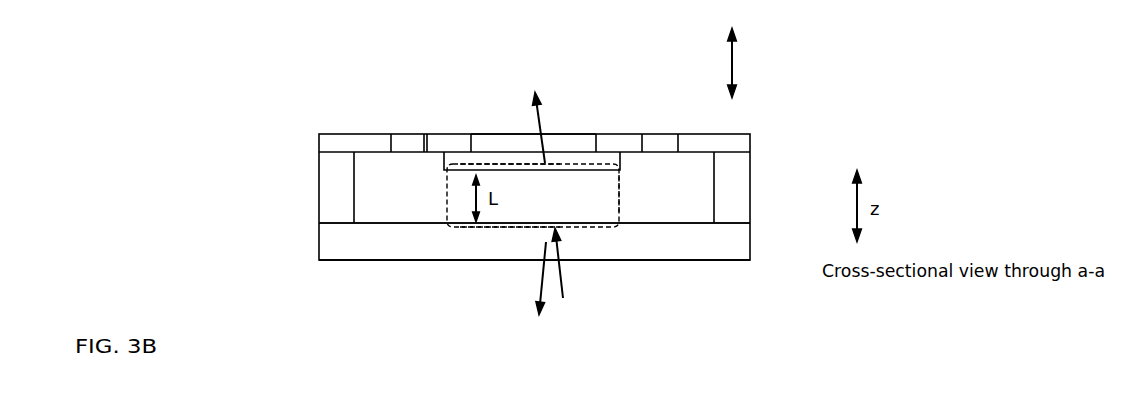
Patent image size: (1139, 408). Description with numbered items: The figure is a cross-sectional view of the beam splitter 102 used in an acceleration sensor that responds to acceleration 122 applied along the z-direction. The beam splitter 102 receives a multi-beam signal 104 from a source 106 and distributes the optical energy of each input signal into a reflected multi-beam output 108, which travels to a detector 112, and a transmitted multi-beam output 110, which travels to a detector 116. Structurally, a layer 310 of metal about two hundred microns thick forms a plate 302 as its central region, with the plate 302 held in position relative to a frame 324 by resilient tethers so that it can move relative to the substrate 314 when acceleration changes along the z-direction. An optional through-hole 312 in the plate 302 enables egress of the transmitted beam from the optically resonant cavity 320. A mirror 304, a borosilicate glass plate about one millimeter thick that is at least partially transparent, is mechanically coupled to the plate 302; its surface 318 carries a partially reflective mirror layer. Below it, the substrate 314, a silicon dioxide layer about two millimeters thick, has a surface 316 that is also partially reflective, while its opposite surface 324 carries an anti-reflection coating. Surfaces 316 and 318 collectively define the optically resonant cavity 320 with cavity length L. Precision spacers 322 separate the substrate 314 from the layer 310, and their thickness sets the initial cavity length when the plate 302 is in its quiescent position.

The beam splitter 102 is at (256, 83).
The multi-beam signal 104 is at (563, 278).
The source 106 is at (658, 323).
The reflected multi-beam output 108 is at (540, 278).
The transmitted multi-beam output 110 is at (541, 118).
The detector 112 is at (438, 350).
The detector 116 is at (451, 53).
The acceleration 122 is at (751, 63).
The plate 302 is at (647, 109).
The mirror 304 is at (616, 163).
The layer 310 is at (740, 146).
The through-hole 312 is at (488, 134).
The substrate 314 is at (385, 254).
The surface 316 is at (463, 227).
The surface 318 is at (463, 172).
The optically resonant cavity 320 is at (620, 198).
The spacers 322 is at (328, 194).
The frame 324 is at (443, 262).